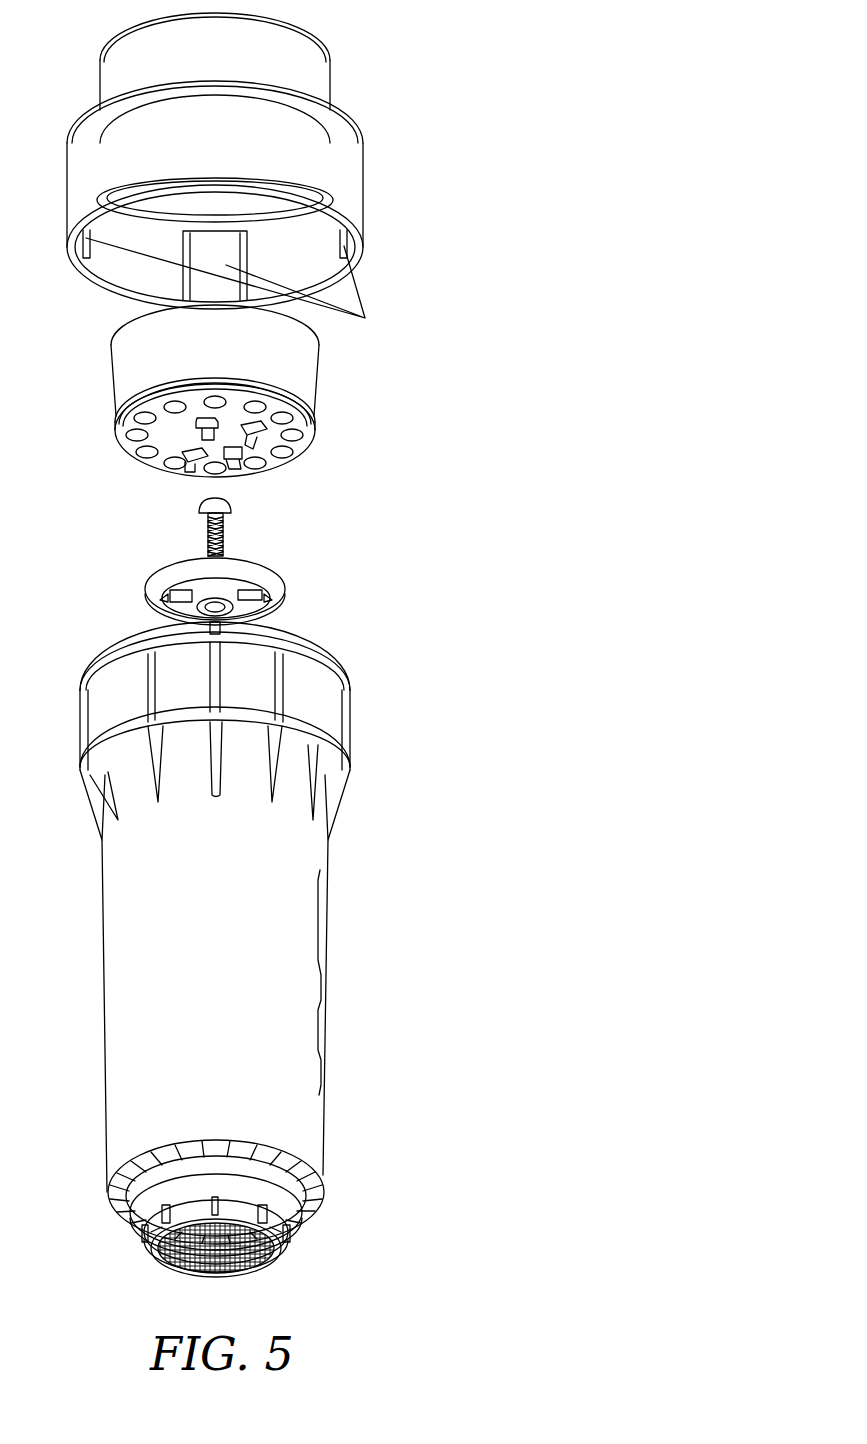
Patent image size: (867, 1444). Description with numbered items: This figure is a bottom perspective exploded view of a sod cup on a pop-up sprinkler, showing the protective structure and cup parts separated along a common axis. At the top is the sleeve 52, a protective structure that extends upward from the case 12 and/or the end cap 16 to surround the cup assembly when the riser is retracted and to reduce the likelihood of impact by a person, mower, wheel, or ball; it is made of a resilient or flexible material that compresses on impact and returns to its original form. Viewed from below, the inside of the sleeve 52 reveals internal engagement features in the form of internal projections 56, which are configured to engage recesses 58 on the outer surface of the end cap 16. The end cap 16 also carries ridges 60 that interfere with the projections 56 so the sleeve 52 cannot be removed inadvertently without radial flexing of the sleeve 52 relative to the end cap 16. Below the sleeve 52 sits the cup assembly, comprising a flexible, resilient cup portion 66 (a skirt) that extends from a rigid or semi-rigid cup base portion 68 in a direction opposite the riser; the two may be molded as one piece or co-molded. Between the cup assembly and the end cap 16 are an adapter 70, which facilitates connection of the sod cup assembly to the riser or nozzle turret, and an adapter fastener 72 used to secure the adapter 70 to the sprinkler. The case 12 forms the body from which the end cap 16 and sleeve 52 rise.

The case 12 is at (310, 872).
The end cap 16 is at (245, 932).
The sleeve 52 is at (310, 181).
The internal projections 56 is at (242, 294).
The recesses 58 is at (247, 695).
The ridges 60 is at (128, 647).
The cup portion 66 is at (185, 409).
The cup base portion 68 is at (173, 438).
The adapter 70 is at (263, 575).
The adapter fastener 72 is at (225, 530).